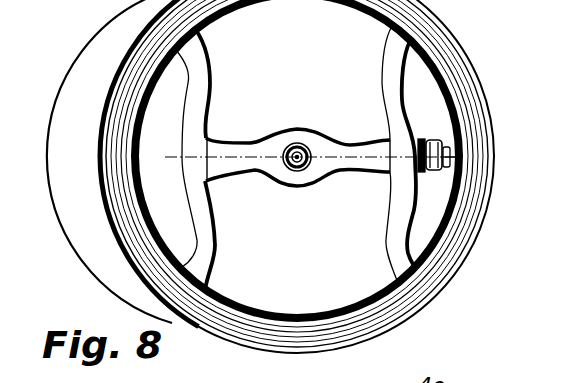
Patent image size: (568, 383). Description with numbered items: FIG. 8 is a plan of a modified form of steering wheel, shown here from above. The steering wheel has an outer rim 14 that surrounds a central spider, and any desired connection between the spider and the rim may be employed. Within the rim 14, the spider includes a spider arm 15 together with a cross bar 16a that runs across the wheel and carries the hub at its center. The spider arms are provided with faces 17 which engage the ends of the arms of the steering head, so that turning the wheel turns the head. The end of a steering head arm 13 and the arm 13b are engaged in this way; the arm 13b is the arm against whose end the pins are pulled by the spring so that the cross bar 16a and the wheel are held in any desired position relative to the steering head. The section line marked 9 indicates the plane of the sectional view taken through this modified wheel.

The wheel rim 9 is at (165, 157).
The rim 14 is at (292, 318).
The faces 17 is at (213, 146).
The arm 13 is at (240, 172).
The arm 13b is at (349, 172).
The spider arm 15 is at (210, 229).
The cross bar 16a is at (386, 235).